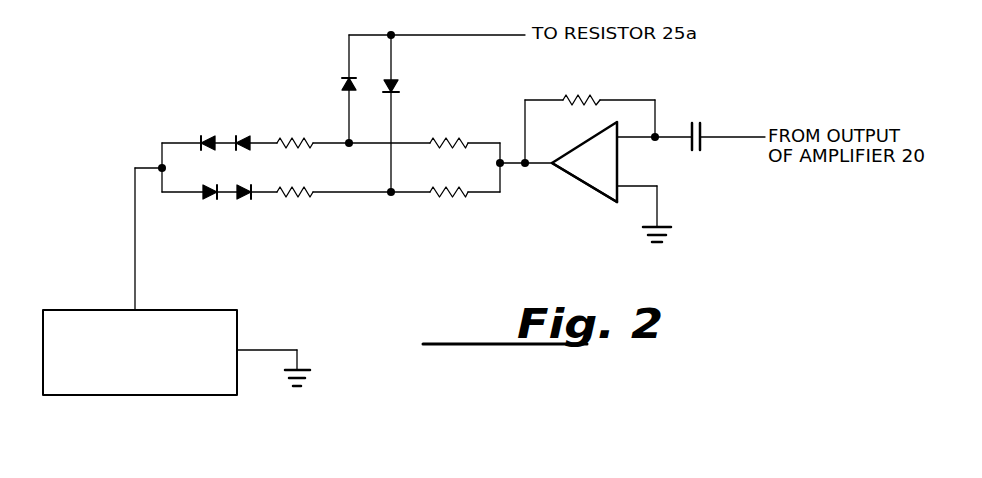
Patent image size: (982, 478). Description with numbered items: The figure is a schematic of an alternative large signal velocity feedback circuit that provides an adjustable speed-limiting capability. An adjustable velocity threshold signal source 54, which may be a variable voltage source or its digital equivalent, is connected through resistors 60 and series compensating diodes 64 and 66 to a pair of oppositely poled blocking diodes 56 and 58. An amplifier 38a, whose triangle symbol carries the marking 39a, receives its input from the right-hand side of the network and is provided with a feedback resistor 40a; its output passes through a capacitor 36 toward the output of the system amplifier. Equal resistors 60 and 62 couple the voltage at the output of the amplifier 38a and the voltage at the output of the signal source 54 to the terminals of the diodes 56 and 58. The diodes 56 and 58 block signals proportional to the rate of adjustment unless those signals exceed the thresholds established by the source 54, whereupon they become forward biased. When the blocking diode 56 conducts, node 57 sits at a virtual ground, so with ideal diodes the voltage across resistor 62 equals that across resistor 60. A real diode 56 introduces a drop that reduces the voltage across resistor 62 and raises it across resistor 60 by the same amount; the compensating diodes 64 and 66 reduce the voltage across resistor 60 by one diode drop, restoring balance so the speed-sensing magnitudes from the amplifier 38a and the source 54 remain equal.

The capacitor 36 is at (705, 125).
The amplifier 38a is at (572, 140).
The amplifier 39a is at (590, 168).
The feedback resistor 40a is at (578, 95).
The adjustable velocity threshold signal source 54 is at (223, 323).
The diode 56 is at (347, 77).
The node 57 is at (351, 146).
The diode 58 is at (393, 80).
The resistor 60 is at (281, 136).
The resistor 62 is at (462, 144).
The compensating diode 64 is at (240, 118).
The compensating diode 66 is at (240, 230).